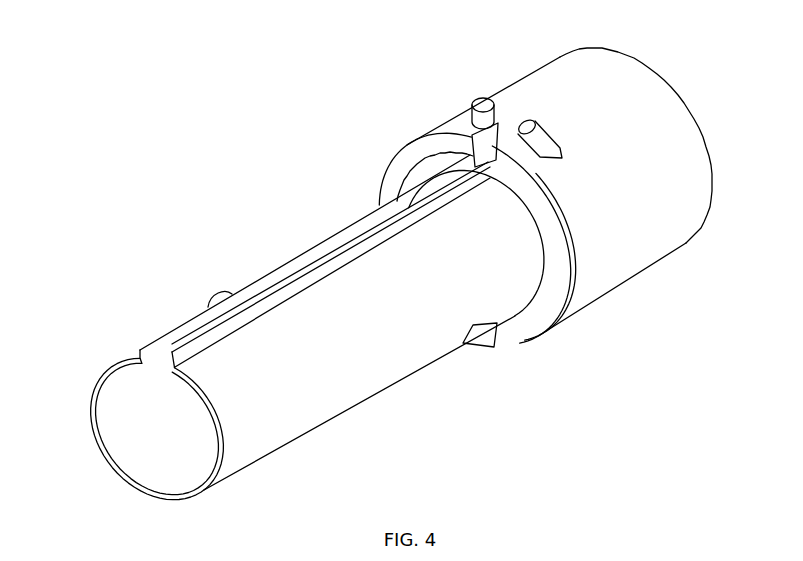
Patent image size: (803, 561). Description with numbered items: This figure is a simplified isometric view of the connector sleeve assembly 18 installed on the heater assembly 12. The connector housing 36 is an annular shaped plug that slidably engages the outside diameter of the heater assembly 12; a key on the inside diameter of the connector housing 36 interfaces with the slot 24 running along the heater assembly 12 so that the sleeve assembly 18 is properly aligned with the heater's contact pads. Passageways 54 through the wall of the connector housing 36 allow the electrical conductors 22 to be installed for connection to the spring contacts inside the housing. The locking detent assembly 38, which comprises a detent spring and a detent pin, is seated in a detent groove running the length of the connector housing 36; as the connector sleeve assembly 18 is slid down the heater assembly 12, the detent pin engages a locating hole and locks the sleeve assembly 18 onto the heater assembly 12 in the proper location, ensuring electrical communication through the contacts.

The heater assembly 12 is at (333, 395).
The connector sleeve assembly 18 is at (676, 286).
The electrical conductors 22 is at (478, 97).
The slot 24 is at (170, 357).
The connector housing 36 is at (670, 230).
The locking detent assembly 38 is at (493, 332).
The passageways 54 is at (565, 155).